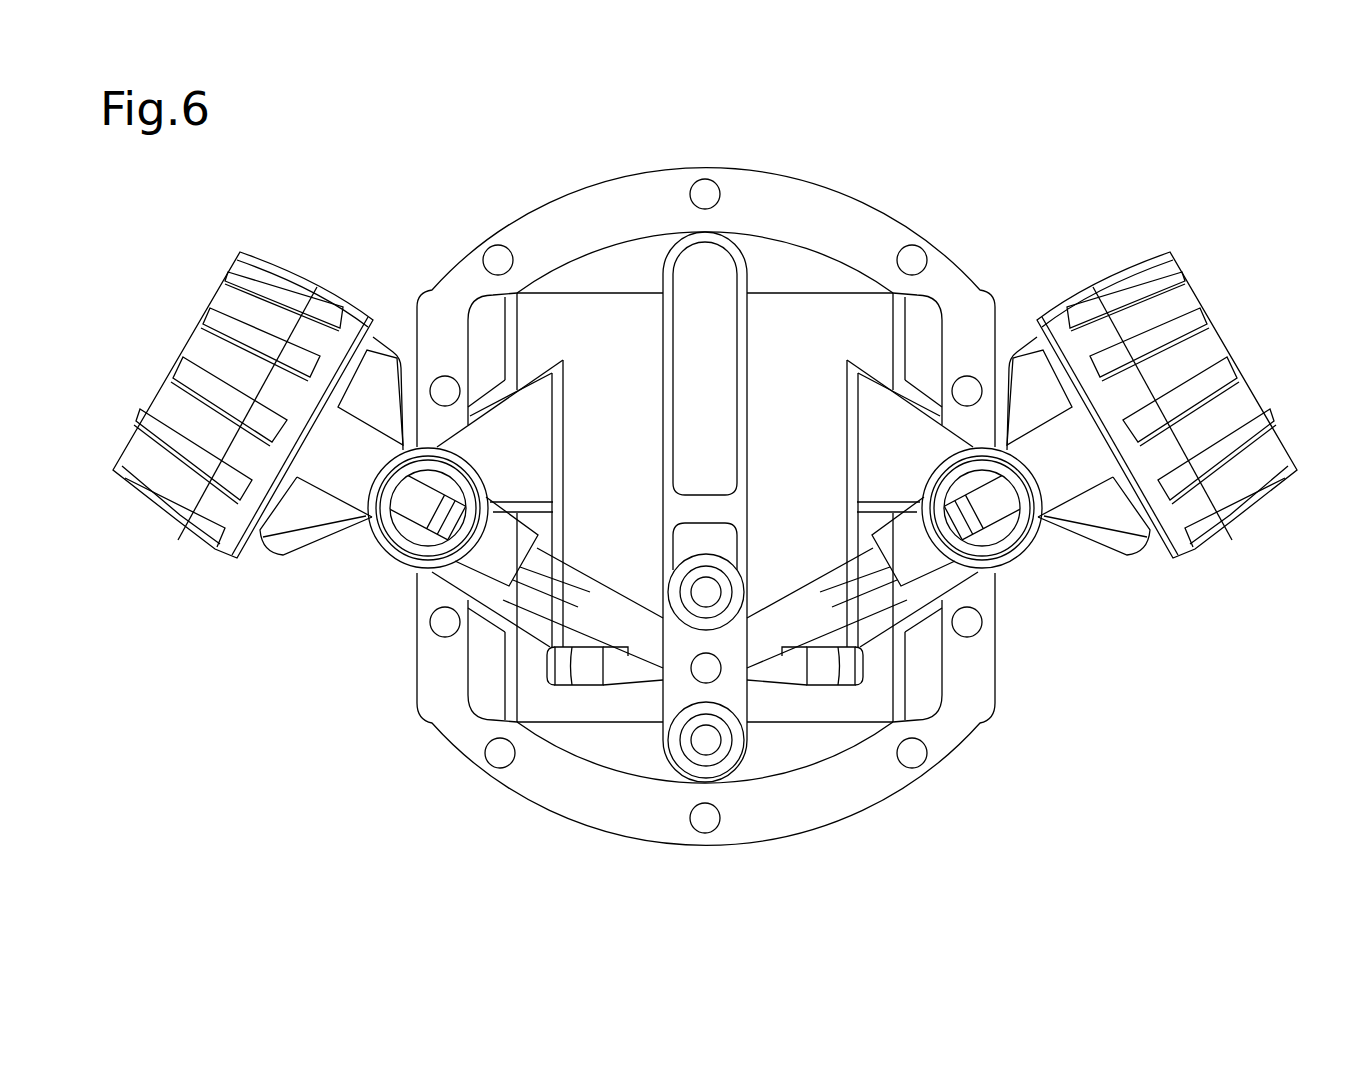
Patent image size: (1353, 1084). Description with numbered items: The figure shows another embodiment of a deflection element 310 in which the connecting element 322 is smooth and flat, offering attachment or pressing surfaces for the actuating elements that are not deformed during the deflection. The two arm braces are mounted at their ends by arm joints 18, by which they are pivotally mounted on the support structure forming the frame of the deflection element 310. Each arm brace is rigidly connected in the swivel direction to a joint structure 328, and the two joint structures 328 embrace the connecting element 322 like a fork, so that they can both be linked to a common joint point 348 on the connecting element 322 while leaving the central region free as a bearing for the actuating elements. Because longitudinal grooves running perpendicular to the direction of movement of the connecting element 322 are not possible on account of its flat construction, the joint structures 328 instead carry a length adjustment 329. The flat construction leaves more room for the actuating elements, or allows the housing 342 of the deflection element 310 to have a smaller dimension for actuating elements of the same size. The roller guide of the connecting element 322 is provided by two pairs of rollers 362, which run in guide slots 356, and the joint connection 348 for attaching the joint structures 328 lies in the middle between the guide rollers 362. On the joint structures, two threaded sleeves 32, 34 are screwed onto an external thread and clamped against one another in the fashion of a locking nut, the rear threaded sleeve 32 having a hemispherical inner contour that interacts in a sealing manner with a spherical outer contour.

The arm joint 18 is at (398, 552).
The threaded sleeve 32 is at (350, 323).
The threaded sleeve 34 is at (275, 288).
The deflection element 310 is at (897, 217).
The connecting element 322 is at (627, 683).
The joint structure 328 is at (585, 620).
The length adjustment 329 is at (540, 587).
The housing 342 is at (802, 207).
The joint point 348 is at (712, 674).
The guide slot 356 is at (733, 417).
The roller 362 is at (675, 565).